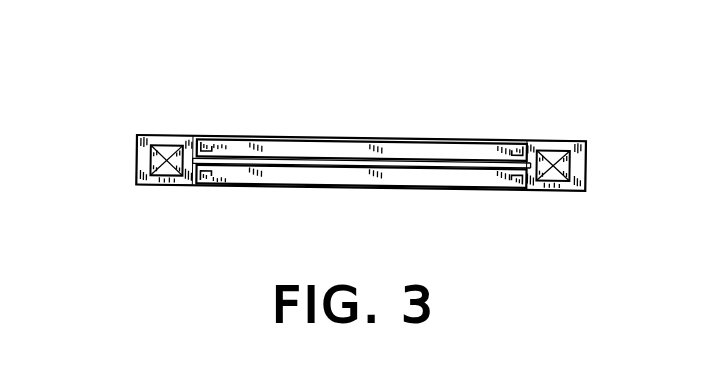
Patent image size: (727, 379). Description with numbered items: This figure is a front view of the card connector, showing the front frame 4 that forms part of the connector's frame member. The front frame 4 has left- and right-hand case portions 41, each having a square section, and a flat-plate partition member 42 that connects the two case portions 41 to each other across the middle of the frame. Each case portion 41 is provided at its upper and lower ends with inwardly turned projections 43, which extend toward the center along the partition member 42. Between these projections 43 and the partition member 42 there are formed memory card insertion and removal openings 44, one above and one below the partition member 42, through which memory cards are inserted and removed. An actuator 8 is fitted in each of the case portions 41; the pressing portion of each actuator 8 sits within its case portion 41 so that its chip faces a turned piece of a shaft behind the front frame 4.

The front frame 4 is at (565, 139).
The case portion 41 is at (136, 157).
The partition member 42 is at (363, 168).
The projection 43 is at (206, 137).
The memory card insertion and removal opening 44 is at (292, 139).
The actuator 8 is at (168, 176).